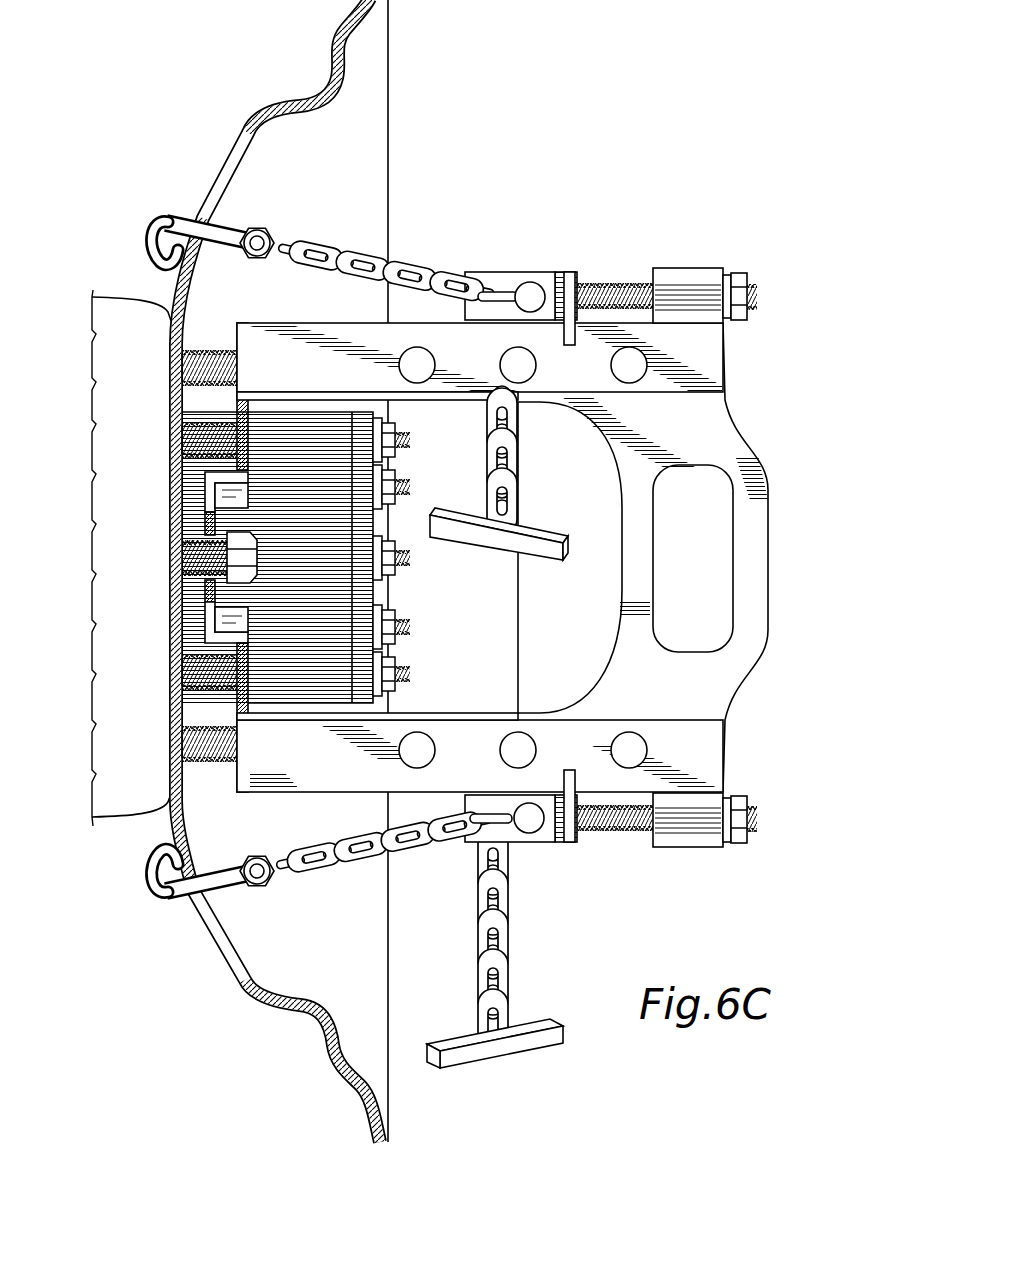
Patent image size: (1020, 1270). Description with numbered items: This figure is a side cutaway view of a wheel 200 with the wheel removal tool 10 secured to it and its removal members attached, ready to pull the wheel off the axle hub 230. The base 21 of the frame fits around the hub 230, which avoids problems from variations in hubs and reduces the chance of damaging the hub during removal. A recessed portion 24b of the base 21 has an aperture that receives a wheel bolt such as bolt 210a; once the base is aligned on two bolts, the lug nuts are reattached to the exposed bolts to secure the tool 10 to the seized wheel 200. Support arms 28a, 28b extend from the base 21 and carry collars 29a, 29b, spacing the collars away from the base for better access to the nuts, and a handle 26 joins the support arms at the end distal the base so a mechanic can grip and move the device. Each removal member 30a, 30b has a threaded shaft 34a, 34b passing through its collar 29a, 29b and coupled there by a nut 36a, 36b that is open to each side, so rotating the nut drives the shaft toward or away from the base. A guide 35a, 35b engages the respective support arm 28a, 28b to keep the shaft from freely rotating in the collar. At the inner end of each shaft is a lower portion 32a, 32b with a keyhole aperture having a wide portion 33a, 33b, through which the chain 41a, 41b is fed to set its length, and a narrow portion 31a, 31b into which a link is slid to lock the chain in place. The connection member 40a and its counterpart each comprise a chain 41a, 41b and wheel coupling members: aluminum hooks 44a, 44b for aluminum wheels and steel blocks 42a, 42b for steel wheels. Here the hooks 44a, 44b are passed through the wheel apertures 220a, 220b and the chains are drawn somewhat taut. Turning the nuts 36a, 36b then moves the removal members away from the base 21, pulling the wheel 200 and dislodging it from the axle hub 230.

The wheel removal tool 10 is at (624, 72).
The wheel 200 is at (323, 70).
The wheel aperture 220b is at (232, 164).
The wheel aperture 220a is at (230, 953).
The hook 44b is at (158, 230).
The hook 44a is at (158, 884).
The chain 41b is at (323, 250).
The chain 41a is at (324, 866).
The base 21 is at (270, 335).
The lower portion 32b is at (480, 272).
The lower portion 32a is at (472, 842).
The narrow portion 31b is at (508, 290).
The narrow portion 31a is at (513, 824).
The wide portion 33b is at (530, 284).
The wide portion 33a is at (531, 830).
The removal member 30b is at (568, 272).
The removal member 30a is at (568, 842).
The threaded shaft 34b is at (609, 283).
The threaded shaft 34a is at (612, 832).
The guide 35b is at (570, 346).
The guide 35a is at (570, 768).
The collar 29b is at (690, 268).
The collar 29a is at (690, 847).
The nut 36b is at (740, 275).
The nut 36a is at (740, 842).
The support arm 28b is at (322, 376).
The support arm 28a is at (334, 775).
The axle hub 230 is at (280, 566).
The recessed portion 24b is at (208, 497).
The bolt 210a is at (183, 560).
The block 42b is at (498, 548).
The block 42a is at (500, 1055).
The connection member 40a is at (508, 990).
The handle 26 is at (773, 562).